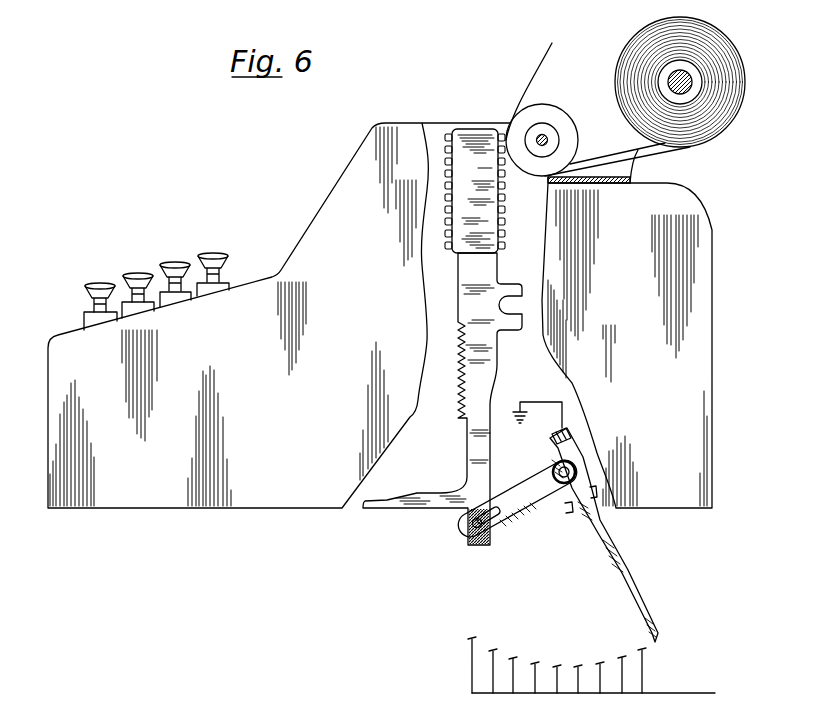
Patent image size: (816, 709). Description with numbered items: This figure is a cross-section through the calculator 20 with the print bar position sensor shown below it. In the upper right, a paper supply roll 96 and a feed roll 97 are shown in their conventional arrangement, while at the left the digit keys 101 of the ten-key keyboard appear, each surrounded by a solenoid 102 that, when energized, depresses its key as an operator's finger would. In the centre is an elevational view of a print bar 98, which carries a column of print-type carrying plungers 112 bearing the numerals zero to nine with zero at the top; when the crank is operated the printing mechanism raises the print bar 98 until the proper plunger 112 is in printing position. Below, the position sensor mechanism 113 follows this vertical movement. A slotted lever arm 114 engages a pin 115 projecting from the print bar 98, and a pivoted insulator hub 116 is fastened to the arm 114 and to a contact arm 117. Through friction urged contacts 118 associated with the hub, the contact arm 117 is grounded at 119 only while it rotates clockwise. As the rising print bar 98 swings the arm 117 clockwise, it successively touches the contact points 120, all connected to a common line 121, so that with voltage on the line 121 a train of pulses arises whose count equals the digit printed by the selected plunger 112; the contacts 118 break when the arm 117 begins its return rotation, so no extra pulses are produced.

The calculator 20 is at (340, 200).
The paper supply roll 96 is at (633, 36).
The feed roll 97 is at (545, 112).
The print bar 98 is at (471, 150).
The digit keys 101 is at (207, 257).
The solenoid 102 is at (84, 319).
The print-type carrying plunger 112 is at (505, 185).
The position sensor mechanism 113 is at (528, 572).
The slotted lever arm 114 is at (462, 527).
The pin 115 is at (491, 528).
The pivoted insulator hub 116 is at (551, 465).
The contact arm 117 is at (608, 543).
The friction urged contacts 118 is at (553, 433).
The ground 119 is at (517, 410).
The contact points 120 is at (600, 663).
The common line 121 is at (687, 693).